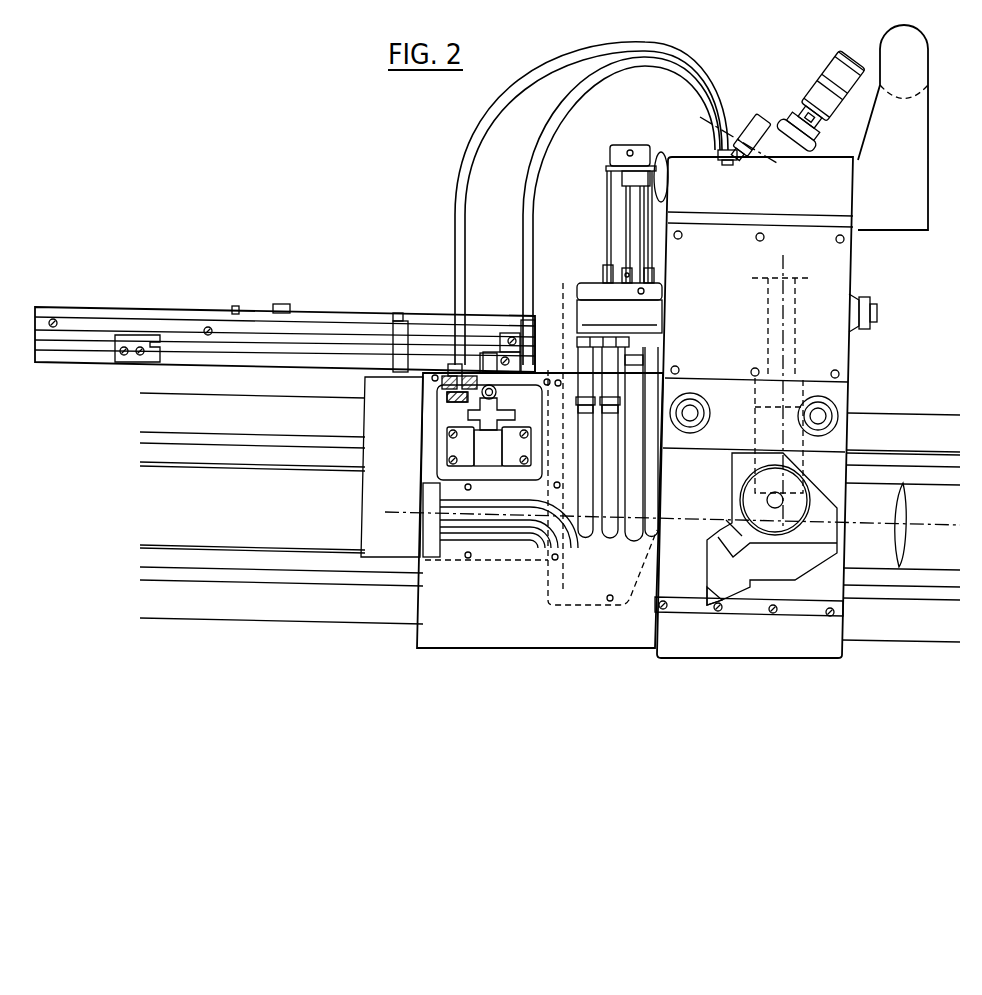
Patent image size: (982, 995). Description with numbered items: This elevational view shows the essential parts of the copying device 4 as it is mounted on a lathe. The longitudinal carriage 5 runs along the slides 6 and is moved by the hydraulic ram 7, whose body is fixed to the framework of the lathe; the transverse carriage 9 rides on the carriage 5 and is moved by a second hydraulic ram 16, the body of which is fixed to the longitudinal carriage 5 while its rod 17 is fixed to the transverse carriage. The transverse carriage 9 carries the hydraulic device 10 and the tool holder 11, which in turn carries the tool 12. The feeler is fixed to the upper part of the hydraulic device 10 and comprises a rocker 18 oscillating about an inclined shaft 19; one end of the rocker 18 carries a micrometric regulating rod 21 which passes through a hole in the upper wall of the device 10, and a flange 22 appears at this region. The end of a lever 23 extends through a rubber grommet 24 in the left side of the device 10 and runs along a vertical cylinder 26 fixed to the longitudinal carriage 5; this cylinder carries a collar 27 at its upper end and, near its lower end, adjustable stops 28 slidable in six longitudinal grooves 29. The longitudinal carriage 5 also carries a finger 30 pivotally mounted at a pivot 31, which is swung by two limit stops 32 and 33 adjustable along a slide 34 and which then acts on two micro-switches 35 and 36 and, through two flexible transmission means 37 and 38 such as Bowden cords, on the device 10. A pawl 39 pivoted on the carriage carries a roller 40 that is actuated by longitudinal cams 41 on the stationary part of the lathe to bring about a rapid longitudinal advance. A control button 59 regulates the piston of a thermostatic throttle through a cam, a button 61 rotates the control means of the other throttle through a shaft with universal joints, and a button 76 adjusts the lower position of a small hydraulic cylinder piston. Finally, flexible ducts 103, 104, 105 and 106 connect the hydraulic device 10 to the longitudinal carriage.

The copying device 4 is at (438, 168).
The longitudinal carriage 5 is at (450, 607).
The slides 6 is at (222, 412).
The hydraulic ram 7 is at (880, 507).
The transverse carriage 9 is at (678, 570).
The hydraulic device 10 is at (810, 352).
The tool holder 11 is at (742, 530).
The tool 12 is at (708, 598).
The hydraulic ram 16 is at (755, 419).
The rod 17 is at (768, 318).
The rocker 18 is at (784, 96).
The shaft 19 is at (716, 125).
The micrometric regulating rod 21 is at (803, 131).
The flange 22 is at (808, 148).
The lever 23 is at (628, 176).
The rubber grommet 24 is at (664, 180).
The vertical cylinder 26 is at (620, 199).
The collar 27 is at (612, 166).
The adjustable stops 28 is at (624, 270).
The longitudinal grooves 29 is at (627, 236).
The finger 30 is at (488, 355).
The pivot 31 is at (495, 396).
The limit stop 32 is at (137, 340).
The limit stop 33 is at (502, 350).
The slide 34 is at (280, 352).
The micro-switch 35 is at (465, 452).
The micro-switch 36 is at (510, 452).
The flexible transmission means 37 is at (455, 250).
The flexible transmission means 38 is at (523, 250).
The pawl 39 is at (400, 340).
The roller 40 is at (396, 313).
The longitudinal cams 41 is at (322, 318).
The control button 59 is at (690, 423).
The button 61 is at (818, 426).
The button 76 is at (868, 306).
The duct 103 is at (594, 552).
The duct 104 is at (521, 596).
The duct 105 is at (521, 612).
The duct 106 is at (521, 628).